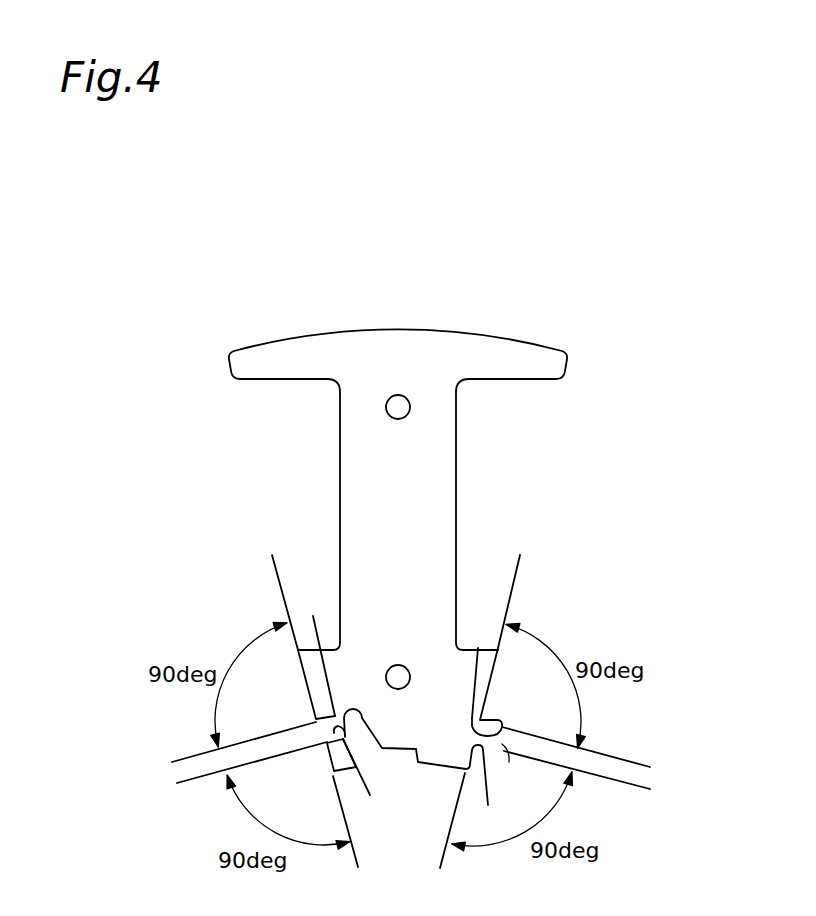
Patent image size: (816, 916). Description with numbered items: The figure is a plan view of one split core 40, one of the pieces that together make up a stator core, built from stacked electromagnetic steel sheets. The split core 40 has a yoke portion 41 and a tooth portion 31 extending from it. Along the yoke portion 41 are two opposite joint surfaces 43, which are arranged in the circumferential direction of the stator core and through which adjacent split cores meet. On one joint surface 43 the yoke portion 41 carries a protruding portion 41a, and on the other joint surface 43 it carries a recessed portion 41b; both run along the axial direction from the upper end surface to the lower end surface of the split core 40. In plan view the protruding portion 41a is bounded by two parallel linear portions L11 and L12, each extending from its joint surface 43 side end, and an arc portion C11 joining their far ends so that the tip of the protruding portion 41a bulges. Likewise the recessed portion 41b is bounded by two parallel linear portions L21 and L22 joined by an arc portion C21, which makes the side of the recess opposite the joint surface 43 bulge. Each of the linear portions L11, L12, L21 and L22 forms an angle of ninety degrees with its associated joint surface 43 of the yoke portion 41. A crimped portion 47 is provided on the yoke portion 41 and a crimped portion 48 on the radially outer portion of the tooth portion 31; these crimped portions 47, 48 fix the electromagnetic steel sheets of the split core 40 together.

The split core 40 is at (596, 314).
The tooth portion 31 is at (397, 342).
The yoke portion 41 is at (373, 690).
The protruding portion 41a is at (478, 648).
The recessed portion 41b is at (334, 745).
The joint surface 43 is at (307, 680).
The crimped portion 47 is at (403, 668).
The crimped portion 48 is at (401, 407).
The linear portion L11 is at (496, 721).
The linear portion L12 is at (473, 809).
The linear portion L21 is at (313, 651).
The linear portion L22 is at (365, 803).
The arc portion C11 is at (509, 762).
The arc portion C21 is at (381, 751).